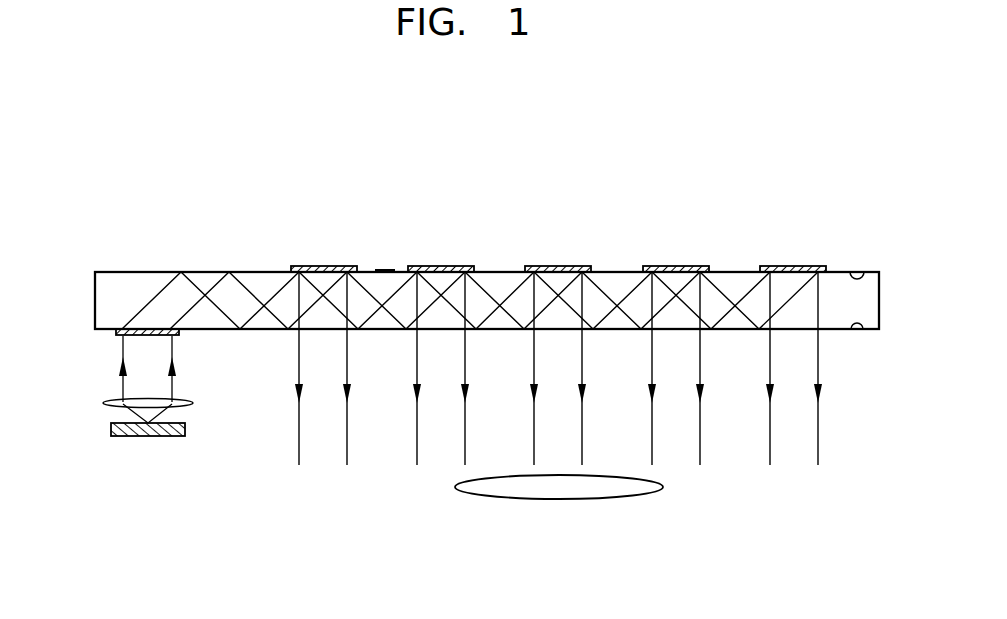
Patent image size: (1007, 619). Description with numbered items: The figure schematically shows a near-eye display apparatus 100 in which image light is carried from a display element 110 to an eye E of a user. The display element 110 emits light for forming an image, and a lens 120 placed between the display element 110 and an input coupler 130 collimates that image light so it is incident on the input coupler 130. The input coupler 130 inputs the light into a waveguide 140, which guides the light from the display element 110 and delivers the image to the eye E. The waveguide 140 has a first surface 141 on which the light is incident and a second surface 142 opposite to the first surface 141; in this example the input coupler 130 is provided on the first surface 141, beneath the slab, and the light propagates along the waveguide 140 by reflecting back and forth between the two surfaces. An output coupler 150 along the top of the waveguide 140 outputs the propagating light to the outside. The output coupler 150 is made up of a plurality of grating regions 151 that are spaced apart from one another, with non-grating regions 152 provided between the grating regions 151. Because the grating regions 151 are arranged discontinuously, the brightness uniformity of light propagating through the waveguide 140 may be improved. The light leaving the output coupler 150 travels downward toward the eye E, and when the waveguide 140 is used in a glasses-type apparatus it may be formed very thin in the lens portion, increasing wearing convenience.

The near-eye display apparatus 100 is at (741, 215).
The display element 110 is at (110, 428).
The lens 120 is at (104, 402).
The input coupler 130 is at (117, 332).
The waveguide 140 is at (102, 299).
The first surface 141 is at (857, 333).
The second surface 142 is at (861, 268).
The output coupler 150 is at (292, 269).
The grating regions 151 is at (325, 266).
The non-grating regions 152 is at (384, 268).
The eye E is at (605, 500).